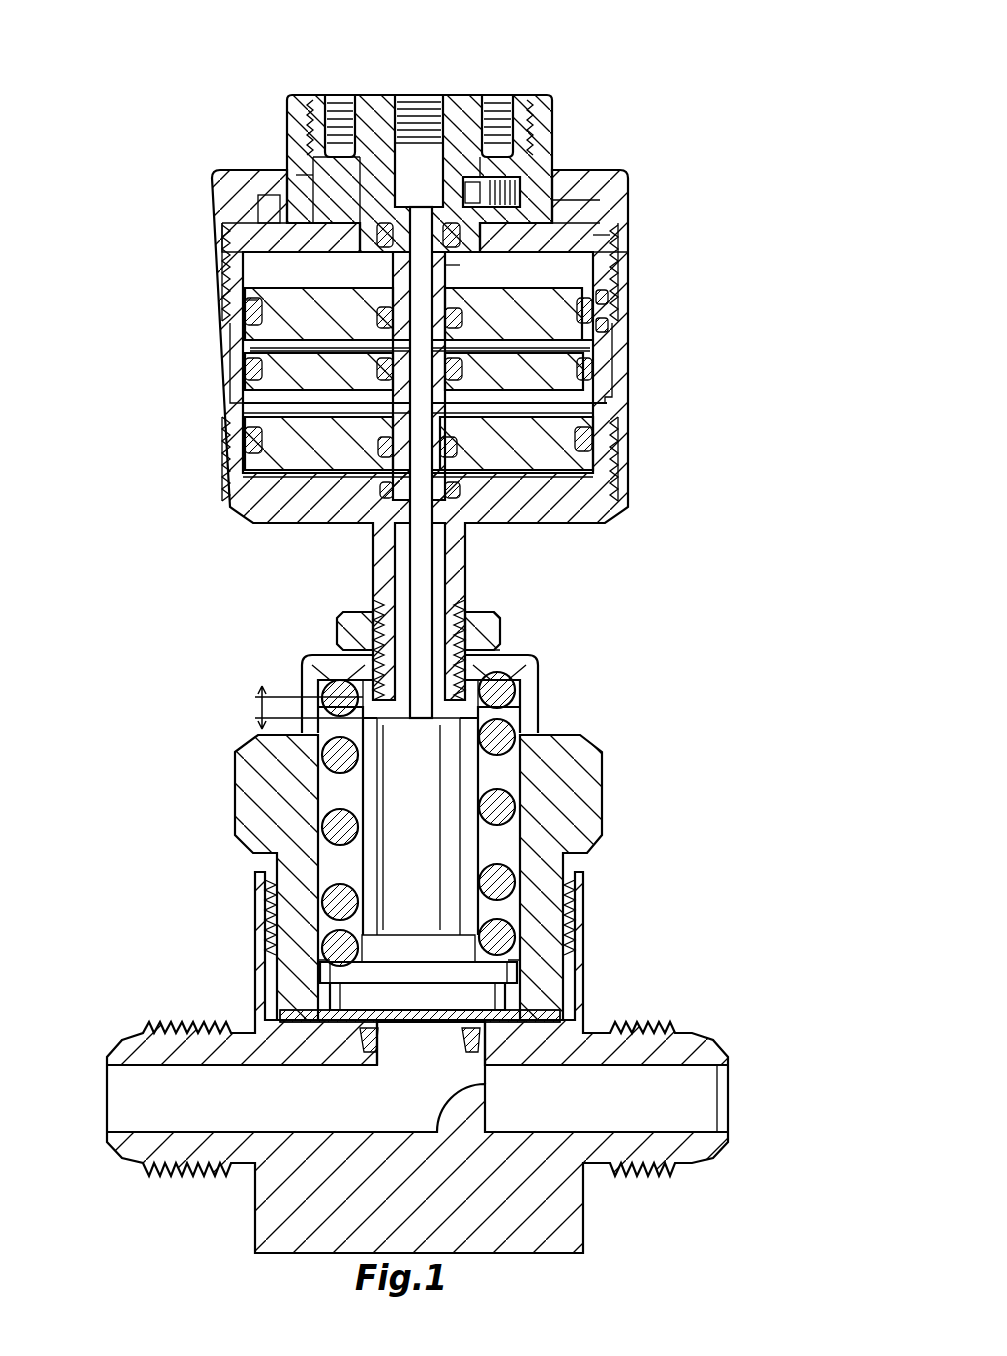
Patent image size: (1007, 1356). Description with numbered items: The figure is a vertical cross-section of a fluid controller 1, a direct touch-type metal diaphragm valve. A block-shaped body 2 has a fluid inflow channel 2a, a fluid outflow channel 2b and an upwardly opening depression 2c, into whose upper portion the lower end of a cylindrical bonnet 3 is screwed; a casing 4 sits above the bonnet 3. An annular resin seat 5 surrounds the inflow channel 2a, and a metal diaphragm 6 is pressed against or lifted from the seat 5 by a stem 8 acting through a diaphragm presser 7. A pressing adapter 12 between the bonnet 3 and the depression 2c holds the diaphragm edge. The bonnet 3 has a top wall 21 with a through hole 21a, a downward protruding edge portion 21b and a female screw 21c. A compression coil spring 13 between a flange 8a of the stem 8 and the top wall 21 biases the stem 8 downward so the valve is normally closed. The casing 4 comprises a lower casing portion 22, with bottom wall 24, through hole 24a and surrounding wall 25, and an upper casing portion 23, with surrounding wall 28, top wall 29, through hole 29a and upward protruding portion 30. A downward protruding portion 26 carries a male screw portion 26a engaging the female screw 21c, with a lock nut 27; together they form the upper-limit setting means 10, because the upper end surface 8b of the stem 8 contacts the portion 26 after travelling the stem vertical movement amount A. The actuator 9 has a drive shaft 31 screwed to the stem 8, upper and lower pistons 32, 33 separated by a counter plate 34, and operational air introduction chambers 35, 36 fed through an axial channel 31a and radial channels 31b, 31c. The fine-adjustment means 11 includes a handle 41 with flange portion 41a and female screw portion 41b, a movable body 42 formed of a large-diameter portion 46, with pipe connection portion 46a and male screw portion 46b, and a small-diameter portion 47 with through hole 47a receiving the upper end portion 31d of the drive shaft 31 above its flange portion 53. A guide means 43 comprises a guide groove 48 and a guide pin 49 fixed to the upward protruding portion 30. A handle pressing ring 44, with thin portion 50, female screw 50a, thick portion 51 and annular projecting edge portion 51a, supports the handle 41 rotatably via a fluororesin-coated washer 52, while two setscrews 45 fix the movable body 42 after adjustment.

The fluid controller 1 is at (735, 291).
The body 2 is at (583, 1238).
The fluid inflow channel 2a is at (178, 1121).
The fluid outflow channel 2b is at (678, 1121).
The depression 2c is at (263, 930).
The bonnet 3 is at (604, 798).
The casing 4 is at (632, 423).
The seat 5 is at (353, 1055).
The diaphragm 6 is at (420, 1040).
The diaphragm presser 7 is at (467, 997).
The stem 8 is at (438, 860).
The flange 8a is at (322, 965).
The upper end surface 8b is at (462, 716).
The actuator 9 is at (572, 283).
The stem vertical-movement-amount upper-limit-value setting means 10 is at (505, 606).
The stem vertical-movement-amount fine-adjustment means 11 is at (558, 94).
The pressing adapter 12 is at (553, 1002).
The compression coil spring 13 is at (500, 737).
The top wall 21 is at (320, 657).
The through hole 21a is at (520, 668).
The downward protruding edge portion 21b is at (522, 688).
The female screw 21c is at (303, 657).
The lower casing portion 22 is at (248, 525).
The upper casing portion 23 is at (232, 383).
The bottom wall 24 is at (293, 521).
The through hole 24a is at (392, 532).
The surrounding wall 25 is at (250, 465).
The downward protruding portion 26 is at (455, 568).
The male screw portion 26a is at (500, 627).
The lock nut 27 is at (363, 623).
The surrounding wall 28 is at (250, 440).
The top wall 29 is at (242, 258).
The through hole 29a is at (372, 232).
The upward protruding portion 30 is at (335, 178).
The drive shaft 31 is at (427, 550).
The axial channel 31a is at (260, 316).
The radial channel 31b is at (260, 367).
The radial channel 31c is at (380, 490).
The upper end portion 31d is at (482, 210).
The upper piston 32 is at (565, 322).
The lower piston 33 is at (557, 440).
The counter plate 34 is at (555, 383).
The operational air introduction chamber 35 is at (560, 393).
The operational air introduction chamber 36 is at (600, 487).
The handle 41 is at (550, 115).
The flange portion 41a is at (235, 228).
The female screw portion 41b is at (307, 120).
The movable body 42 is at (442, 88).
The guide means 43 is at (458, 170).
The handle pressing ring 44 is at (622, 200).
The setscrew 45 is at (338, 102).
The large-diameter portion 46 is at (360, 102).
The pipe connection portion 46a is at (414, 115).
The male screw portion 46b is at (313, 110).
The small-diameter portion 47 is at (300, 176).
The through hole 47a is at (245, 305).
The guide groove 48 is at (600, 240).
The guide pin 49 is at (522, 176).
The thin portion 50 is at (610, 300).
The female screw 50a is at (610, 327).
The thick portion 51 is at (612, 225).
The annular projecting edge portion 51a is at (565, 190).
The washer 52 is at (262, 205).
The flange portion 53 is at (460, 273).
The stem vertical movement amount A is at (304, 709).